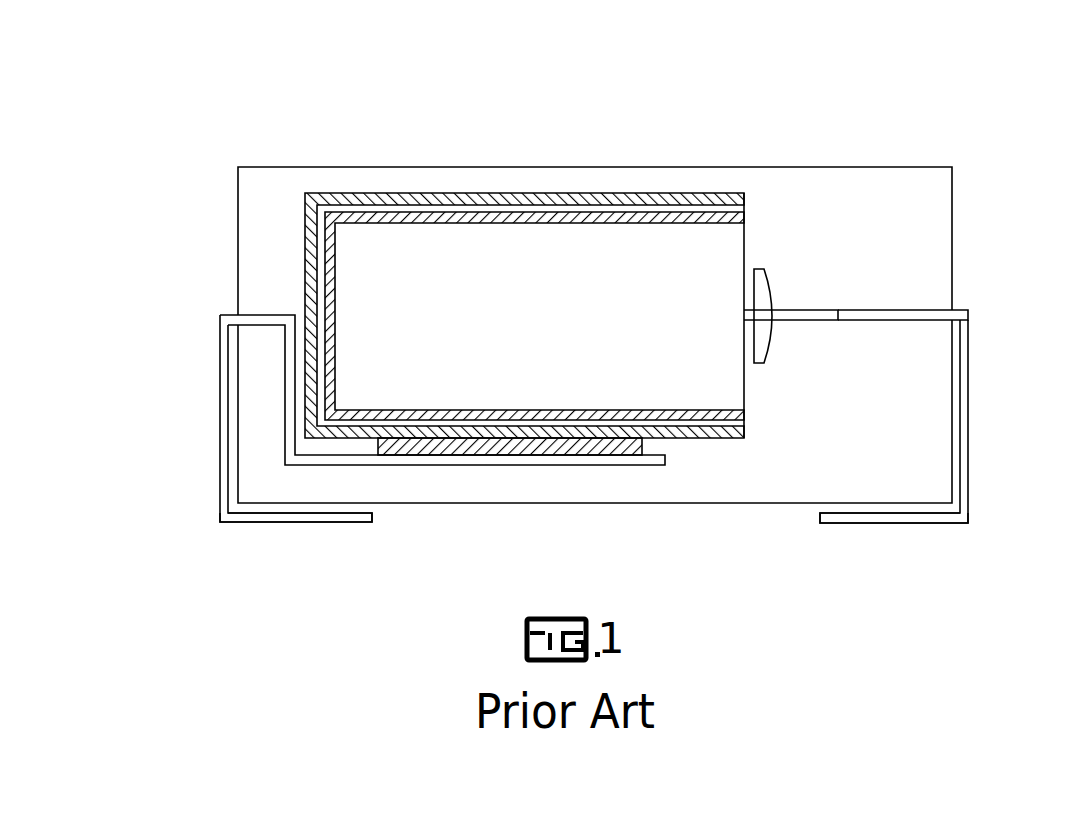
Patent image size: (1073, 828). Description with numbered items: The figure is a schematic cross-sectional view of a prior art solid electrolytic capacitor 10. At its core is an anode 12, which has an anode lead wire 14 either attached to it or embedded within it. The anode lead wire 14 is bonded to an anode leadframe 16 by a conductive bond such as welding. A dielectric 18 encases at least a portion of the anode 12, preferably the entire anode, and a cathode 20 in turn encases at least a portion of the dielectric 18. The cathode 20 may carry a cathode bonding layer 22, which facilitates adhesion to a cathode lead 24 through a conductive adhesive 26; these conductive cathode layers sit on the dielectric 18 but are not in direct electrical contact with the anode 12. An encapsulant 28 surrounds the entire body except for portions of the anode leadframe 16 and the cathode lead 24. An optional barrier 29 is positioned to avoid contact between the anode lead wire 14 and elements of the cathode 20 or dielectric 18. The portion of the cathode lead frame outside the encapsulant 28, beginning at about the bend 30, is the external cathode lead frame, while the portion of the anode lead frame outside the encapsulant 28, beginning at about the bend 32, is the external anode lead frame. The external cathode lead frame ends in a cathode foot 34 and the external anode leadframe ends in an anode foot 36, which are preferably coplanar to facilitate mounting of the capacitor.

The solid electrolytic capacitor 10 is at (619, 113).
The anode 12 is at (521, 327).
The anode lead wire 14 is at (808, 312).
The anode leadframe 16 is at (970, 410).
The dielectric 18 is at (710, 210).
The cathode 20 is at (458, 210).
The cathode bonding layer 22 is at (385, 198).
The cathode lead 24 is at (220, 455).
The conductive adhesive 26 is at (537, 447).
The encapsulant 28 is at (870, 202).
The barrier 29 is at (763, 343).
The bend 30 is at (220, 315).
The bend 32 is at (968, 318).
The cathode foot 34 is at (283, 523).
The anode foot 36 is at (878, 523).